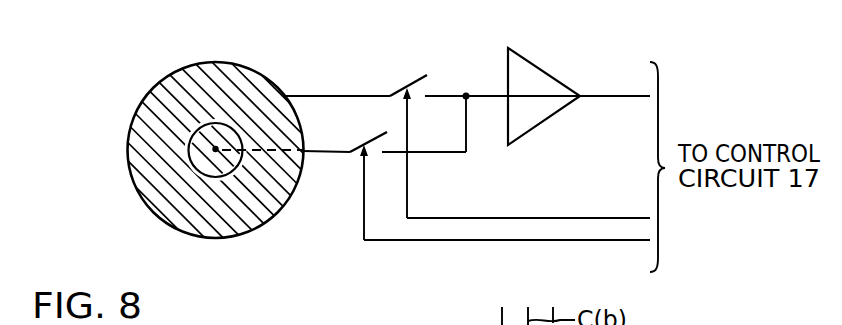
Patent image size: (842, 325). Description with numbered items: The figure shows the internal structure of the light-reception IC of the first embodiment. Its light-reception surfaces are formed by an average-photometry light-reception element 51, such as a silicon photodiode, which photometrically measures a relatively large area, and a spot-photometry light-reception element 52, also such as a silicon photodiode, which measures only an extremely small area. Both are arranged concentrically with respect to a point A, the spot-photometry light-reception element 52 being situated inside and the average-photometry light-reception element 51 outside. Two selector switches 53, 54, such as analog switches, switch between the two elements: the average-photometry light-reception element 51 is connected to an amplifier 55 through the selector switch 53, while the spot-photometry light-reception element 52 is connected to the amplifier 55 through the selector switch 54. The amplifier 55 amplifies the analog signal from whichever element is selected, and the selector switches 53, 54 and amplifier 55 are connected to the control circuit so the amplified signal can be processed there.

The average-photometry light-reception element 51 is at (157, 192).
The spot-photometry light-reception element 52 is at (233, 167).
The selector switch 53 is at (403, 83).
The selector switch 54 is at (353, 142).
The amplifier 55 is at (550, 74).
The point A is at (215, 148).